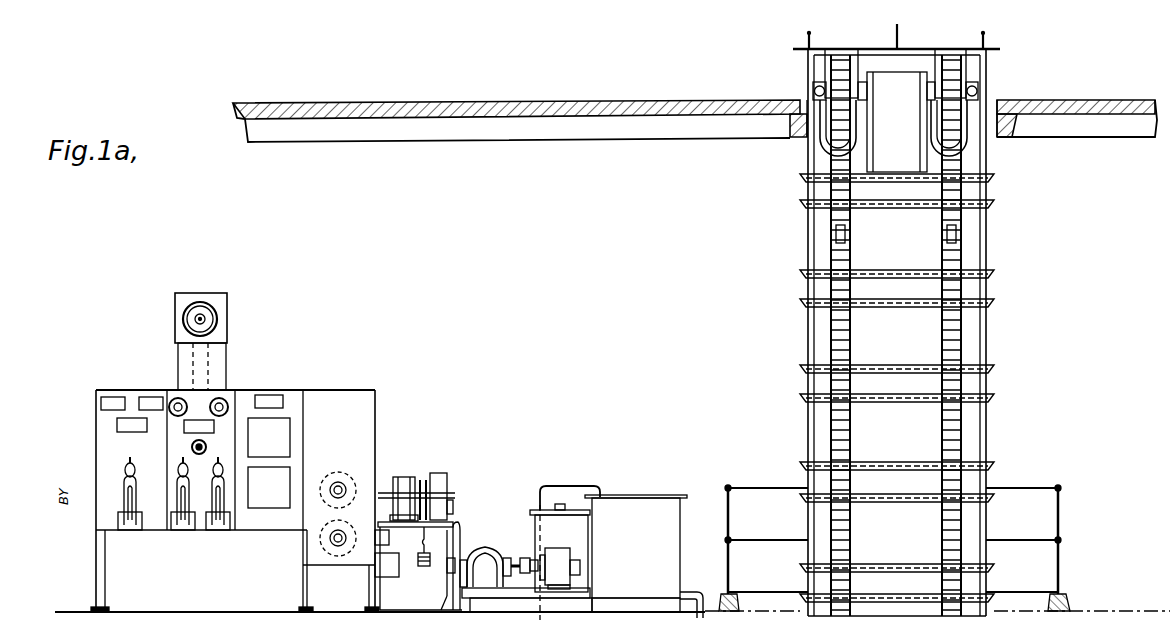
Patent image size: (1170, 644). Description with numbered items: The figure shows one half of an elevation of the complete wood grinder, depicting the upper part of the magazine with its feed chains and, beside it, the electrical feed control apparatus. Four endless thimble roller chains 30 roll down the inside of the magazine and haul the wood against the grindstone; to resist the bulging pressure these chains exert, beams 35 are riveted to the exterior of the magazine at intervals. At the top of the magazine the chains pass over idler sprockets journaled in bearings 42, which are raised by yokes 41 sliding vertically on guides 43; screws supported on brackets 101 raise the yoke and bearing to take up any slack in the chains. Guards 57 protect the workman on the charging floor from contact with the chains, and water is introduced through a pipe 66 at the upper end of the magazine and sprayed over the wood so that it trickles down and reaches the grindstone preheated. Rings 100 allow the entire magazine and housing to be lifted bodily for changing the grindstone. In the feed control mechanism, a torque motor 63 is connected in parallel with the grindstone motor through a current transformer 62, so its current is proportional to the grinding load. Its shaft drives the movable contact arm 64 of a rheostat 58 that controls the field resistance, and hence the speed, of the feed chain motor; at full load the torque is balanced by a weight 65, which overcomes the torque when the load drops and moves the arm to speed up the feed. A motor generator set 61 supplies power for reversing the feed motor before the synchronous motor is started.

The rings 100 is at (807, 38).
The guards 57 is at (841, 50).
The pipe 66 is at (899, 29).
The bearings 42 is at (814, 92).
The yokes 41 is at (818, 140).
The guides 43 is at (920, 155).
The endless thimble roller chains 30 is at (829, 234).
The brackets 101 is at (946, 234).
The beams 35 is at (995, 275).
The torque motor 63 is at (404, 478).
The rheostat 58 is at (441, 476).
The movable contact arm 64 is at (454, 494).
The current transformer 62 is at (530, 512).
The motor generator set 61 is at (490, 550).
The weight 65 is at (424, 567).